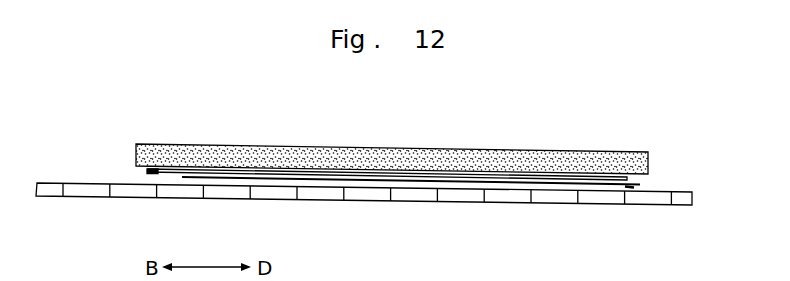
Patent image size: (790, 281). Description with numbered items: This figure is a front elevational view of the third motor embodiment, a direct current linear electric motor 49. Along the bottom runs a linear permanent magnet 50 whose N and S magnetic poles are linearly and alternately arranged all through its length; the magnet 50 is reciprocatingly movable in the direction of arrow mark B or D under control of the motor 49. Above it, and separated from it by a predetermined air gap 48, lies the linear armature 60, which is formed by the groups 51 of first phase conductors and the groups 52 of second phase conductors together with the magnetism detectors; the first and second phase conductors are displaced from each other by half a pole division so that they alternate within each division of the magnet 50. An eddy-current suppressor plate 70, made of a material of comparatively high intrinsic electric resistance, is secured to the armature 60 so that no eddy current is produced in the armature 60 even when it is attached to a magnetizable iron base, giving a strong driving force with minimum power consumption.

The air gap 48 is at (631, 187).
The direct current linear electric motor 49 is at (175, 137).
The linear permanent magnet 50 is at (263, 202).
The groups of first phase conductors 51 is at (536, 177).
The groups of second phase conductors 52 is at (638, 181).
The linear armature 60 is at (147, 175).
The eddy-current suppressor plate 70 is at (273, 146).